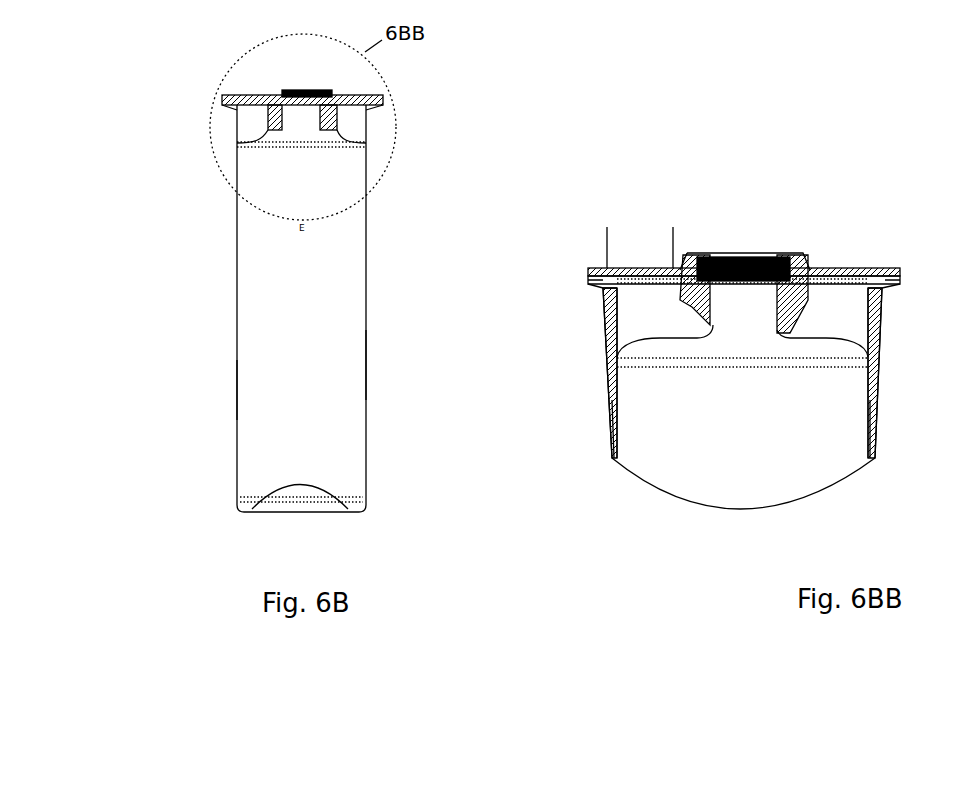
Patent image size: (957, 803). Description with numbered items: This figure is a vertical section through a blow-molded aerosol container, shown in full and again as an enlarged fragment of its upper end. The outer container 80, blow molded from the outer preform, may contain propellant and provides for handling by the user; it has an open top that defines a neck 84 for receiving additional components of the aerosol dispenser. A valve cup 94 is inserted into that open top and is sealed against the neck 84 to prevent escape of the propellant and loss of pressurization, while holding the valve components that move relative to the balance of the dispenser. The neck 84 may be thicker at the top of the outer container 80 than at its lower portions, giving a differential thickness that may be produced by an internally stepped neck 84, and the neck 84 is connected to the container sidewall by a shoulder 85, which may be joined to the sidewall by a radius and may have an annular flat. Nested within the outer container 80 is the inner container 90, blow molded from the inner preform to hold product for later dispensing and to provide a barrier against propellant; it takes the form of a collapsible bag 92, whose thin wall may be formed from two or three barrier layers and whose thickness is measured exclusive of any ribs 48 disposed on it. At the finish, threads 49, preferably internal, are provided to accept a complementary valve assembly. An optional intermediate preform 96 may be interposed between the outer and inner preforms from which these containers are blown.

In FIG. 6B, the outer container 80 is at (237, 120).
In FIG. 6BB, the outer container 80 is at (608, 332).
In FIG. 6B, the neck 84 is at (337, 110).
In FIG. 6BB, the neck 84 is at (714, 308).
In FIG. 6BB, the shoulder 85 is at (655, 341).
In FIG. 6BB, the ribs 48 is at (793, 308).
In FIG. 6BB, the threads 49 is at (755, 252).
In FIG. 6BB, the valve cup 94 is at (673, 217).
In FIG. 6BB, the inner container 90 is at (617, 425).
In FIG. 6B, the collapsible bag 92 is at (366, 352).
In FIG. 6BB, the collapsible bag 92 is at (870, 425).
In FIG. 6B, the intermediate preform 96 is at (237, 370).